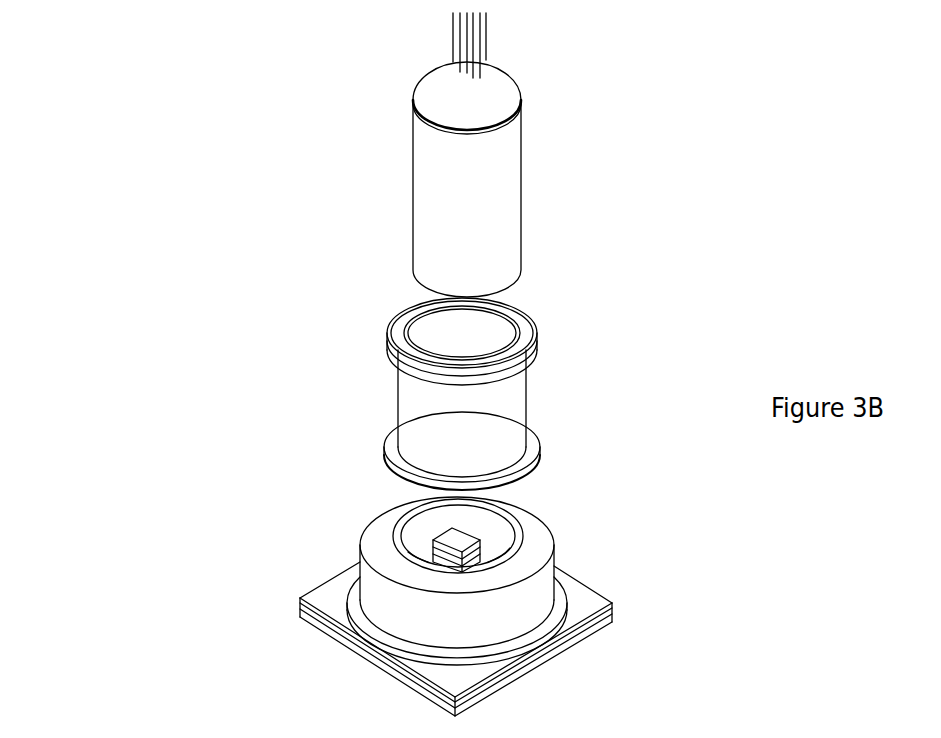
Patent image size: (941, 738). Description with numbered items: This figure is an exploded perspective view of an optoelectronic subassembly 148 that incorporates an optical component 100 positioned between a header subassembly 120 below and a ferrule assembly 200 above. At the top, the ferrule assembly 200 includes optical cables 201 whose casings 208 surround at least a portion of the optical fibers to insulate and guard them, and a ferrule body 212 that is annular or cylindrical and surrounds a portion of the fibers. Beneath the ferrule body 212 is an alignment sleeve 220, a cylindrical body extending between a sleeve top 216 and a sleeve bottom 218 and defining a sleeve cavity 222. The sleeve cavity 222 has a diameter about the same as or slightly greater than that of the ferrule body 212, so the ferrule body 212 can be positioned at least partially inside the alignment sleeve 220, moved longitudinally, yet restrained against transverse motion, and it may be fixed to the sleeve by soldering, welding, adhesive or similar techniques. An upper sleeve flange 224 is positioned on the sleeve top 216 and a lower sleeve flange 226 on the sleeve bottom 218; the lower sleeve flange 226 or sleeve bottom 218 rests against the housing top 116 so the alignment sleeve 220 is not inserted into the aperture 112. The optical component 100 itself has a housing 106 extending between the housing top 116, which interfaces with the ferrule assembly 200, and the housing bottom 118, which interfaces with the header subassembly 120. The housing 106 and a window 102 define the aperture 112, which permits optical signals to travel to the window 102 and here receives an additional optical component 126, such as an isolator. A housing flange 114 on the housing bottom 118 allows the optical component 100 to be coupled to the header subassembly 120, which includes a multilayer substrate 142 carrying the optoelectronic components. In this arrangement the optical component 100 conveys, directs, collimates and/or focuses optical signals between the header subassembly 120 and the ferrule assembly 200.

The optoelectronic subassembly 148 is at (195, 363).
The optical cable 201 is at (440, 40).
The casing 208 is at (480, 20).
The ferrule assembly 200 is at (527, 72).
The ferrule body 212 is at (430, 252).
The sleeve top 216 is at (370, 347).
The upper sleeve flange 224 is at (533, 357).
The sleeve cavity 222 is at (458, 331).
The alignment sleeve 220 is at (500, 433).
The sleeve bottom 218 is at (372, 442).
The lower sleeve flange 226 is at (520, 463).
The optical component 100 is at (280, 562).
The housing top 116 is at (350, 548).
The housing 106 is at (538, 590).
The optical component (isolator) 126 is at (433, 543).
The aperture 112 is at (458, 523).
The window 102 is at (481, 543).
The housing bottom 118 is at (348, 605).
The header subassembly 120 is at (323, 660).
The housing flange 114 is at (553, 627).
The substrate 142 is at (402, 678).